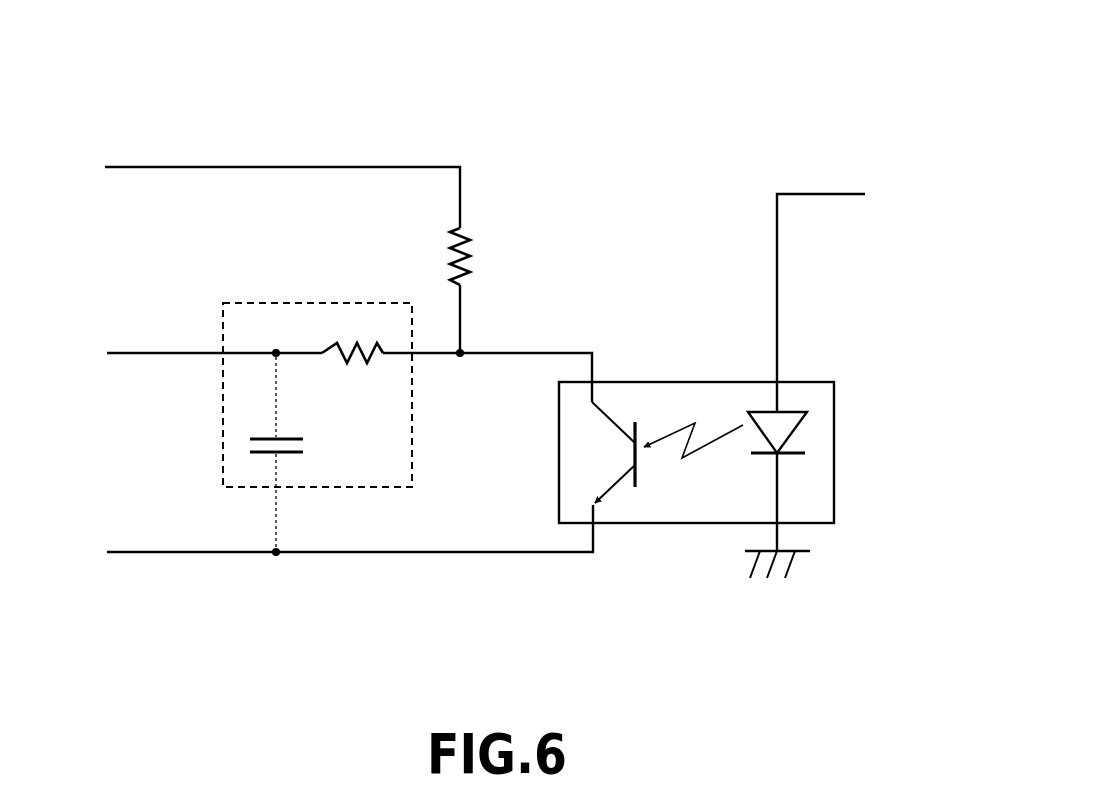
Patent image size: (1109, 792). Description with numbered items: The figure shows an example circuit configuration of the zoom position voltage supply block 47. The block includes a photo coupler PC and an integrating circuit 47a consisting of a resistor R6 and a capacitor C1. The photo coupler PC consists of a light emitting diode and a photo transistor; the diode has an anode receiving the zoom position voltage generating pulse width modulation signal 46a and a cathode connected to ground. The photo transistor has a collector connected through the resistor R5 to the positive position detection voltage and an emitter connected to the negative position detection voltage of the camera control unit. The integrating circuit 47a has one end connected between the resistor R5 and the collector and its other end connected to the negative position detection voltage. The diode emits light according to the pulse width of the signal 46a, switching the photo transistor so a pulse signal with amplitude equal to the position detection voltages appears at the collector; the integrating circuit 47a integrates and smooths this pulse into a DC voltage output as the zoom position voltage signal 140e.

The zoom position voltage supply block 47 is at (697, 130).
The integrating circuit 47a is at (253, 303).
The zoom position voltage generating pulse width modulation signal 46a is at (851, 283).
The zoom position voltage signal 140e is at (176, 352).
The photo coupler PC is at (603, 382).
The resistor R5 is at (481, 256).
The resistor R6 is at (352, 372).
The capacitor C1 is at (298, 447).